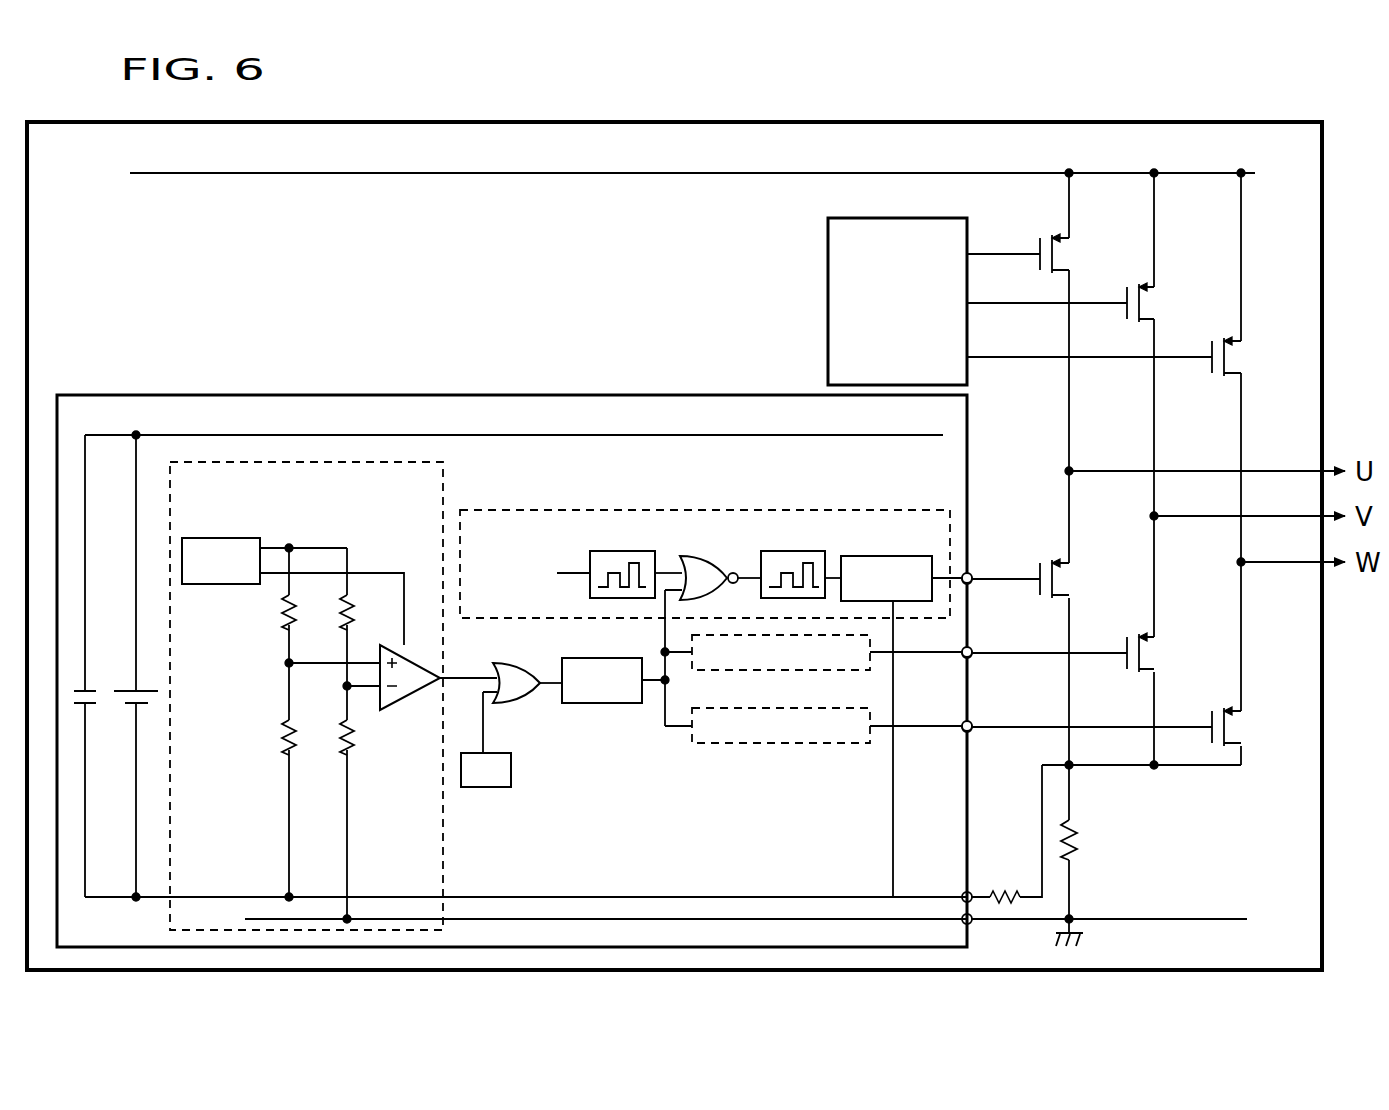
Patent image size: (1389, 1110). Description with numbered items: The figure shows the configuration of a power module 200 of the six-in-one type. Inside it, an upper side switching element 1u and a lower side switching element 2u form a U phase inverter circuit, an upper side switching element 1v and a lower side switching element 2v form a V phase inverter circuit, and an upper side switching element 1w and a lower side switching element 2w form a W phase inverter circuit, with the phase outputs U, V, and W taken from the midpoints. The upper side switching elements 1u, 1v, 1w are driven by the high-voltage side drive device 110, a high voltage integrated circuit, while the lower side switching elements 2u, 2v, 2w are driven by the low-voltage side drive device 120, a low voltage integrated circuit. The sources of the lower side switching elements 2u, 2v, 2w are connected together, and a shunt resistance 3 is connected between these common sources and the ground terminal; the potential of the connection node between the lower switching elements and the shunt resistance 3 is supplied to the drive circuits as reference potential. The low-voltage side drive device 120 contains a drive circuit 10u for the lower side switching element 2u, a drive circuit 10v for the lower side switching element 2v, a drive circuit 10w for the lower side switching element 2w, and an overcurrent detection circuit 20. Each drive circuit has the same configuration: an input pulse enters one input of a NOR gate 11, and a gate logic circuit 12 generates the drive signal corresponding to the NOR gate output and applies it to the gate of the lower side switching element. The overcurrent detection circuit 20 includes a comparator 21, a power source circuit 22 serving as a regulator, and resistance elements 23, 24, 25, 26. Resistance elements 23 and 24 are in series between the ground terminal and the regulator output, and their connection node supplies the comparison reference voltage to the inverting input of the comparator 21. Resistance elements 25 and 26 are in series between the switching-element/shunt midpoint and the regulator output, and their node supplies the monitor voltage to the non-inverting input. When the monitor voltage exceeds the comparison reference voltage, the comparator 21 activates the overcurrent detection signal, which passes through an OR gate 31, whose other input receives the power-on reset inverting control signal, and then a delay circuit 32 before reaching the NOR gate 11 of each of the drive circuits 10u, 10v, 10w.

The power module 200 is at (1222, 122).
The high-voltage side drive device 110 is at (914, 220).
The low-voltage side drive device 120 is at (508, 395).
The upper side switching element 1u is at (1076, 254).
The upper side switching element 1v is at (1161, 303).
The upper side switching element 1w is at (1248, 357).
The lower side switching element 2u is at (1076, 579).
The lower side switching element 2v is at (1161, 653).
The lower side switching element 2w is at (1248, 727).
The shunt resistance 3 is at (1082, 843).
The overcurrent detection circuit 20 is at (445, 490).
The comparator 21 is at (404, 700).
The power source circuit 22 is at (247, 540).
The resistance element 23 is at (338, 622).
The resistance element 24 is at (338, 748).
The resistance element 25 is at (280, 622).
The resistance element 26 is at (280, 748).
The drive circuit 10u is at (716, 689).
The drive circuit 10v is at (808, 672).
The drive circuit 10w is at (808, 745).
The NOR gate 11 is at (716, 596).
The gate logic circuit 12 is at (884, 555).
The OR gate 31 is at (518, 706).
The delay circuit 32 is at (617, 704).